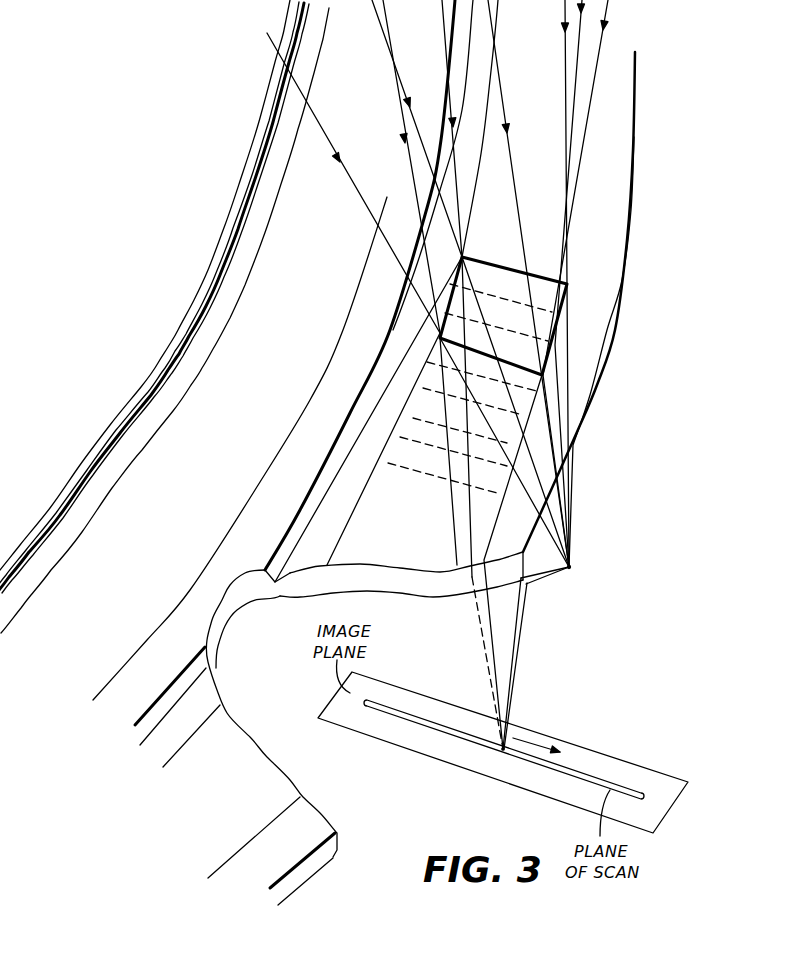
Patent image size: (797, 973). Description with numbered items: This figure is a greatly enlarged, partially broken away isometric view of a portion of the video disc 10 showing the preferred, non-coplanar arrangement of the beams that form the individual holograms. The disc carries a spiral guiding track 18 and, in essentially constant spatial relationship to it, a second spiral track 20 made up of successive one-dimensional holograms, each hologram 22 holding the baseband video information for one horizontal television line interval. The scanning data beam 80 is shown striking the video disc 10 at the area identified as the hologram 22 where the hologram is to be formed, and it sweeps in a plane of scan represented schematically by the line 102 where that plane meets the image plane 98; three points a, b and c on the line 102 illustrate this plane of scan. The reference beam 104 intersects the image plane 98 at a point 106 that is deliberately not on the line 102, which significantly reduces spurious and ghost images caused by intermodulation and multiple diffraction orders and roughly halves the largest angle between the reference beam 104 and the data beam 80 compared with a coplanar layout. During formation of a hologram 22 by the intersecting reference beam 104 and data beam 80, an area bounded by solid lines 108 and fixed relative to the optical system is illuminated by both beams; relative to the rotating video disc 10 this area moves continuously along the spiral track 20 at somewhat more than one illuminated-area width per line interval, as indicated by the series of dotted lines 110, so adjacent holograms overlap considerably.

The video disc 10 is at (313, 868).
The spiral guiding track 18 is at (42, 522).
The second spiral track 20 is at (148, 490).
The hologram 22 is at (557, 312).
The scanning data beam 80 is at (520, 640).
The image plane 98 is at (503, 752).
The line 102 is at (593, 778).
The reference beam 104 is at (570, 473).
The point 106 is at (573, 566).
The solid lines 108 is at (509, 267).
The dotted lines 110 is at (414, 480).